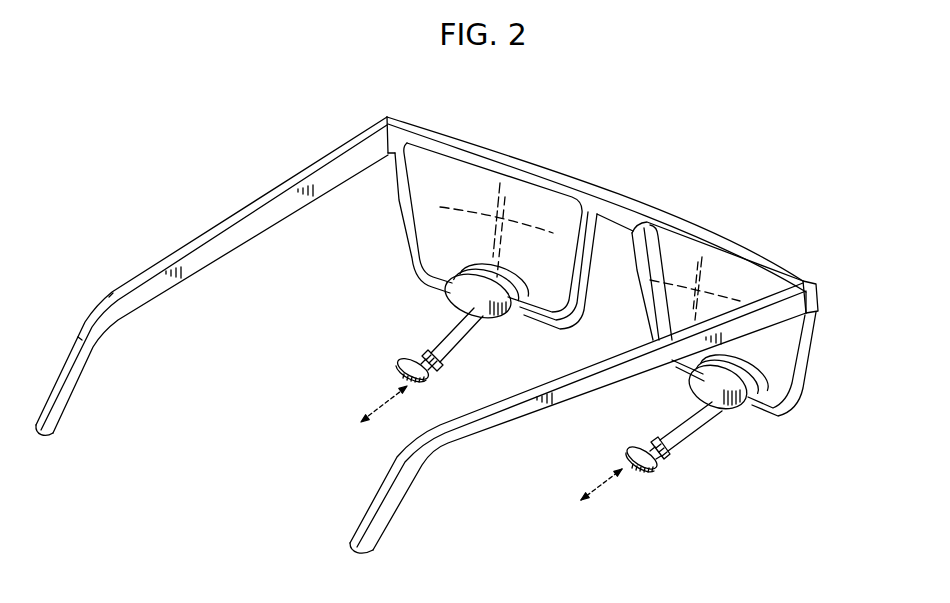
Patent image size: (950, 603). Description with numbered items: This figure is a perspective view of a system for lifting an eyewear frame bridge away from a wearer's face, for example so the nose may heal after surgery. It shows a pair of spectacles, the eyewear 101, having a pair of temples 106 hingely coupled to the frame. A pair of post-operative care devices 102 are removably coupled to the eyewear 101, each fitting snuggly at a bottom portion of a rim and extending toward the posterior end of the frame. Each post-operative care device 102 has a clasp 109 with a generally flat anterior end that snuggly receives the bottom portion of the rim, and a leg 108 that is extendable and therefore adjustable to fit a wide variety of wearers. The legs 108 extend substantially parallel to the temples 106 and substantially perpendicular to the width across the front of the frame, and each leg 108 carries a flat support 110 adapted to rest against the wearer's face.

The eyewear 101 is at (427, 335).
The post-operative care device 102 is at (700, 446).
The temple 106 is at (213, 265).
The leg 108 is at (460, 333).
The clasp 109 is at (460, 294).
The flat support 110 is at (397, 372).